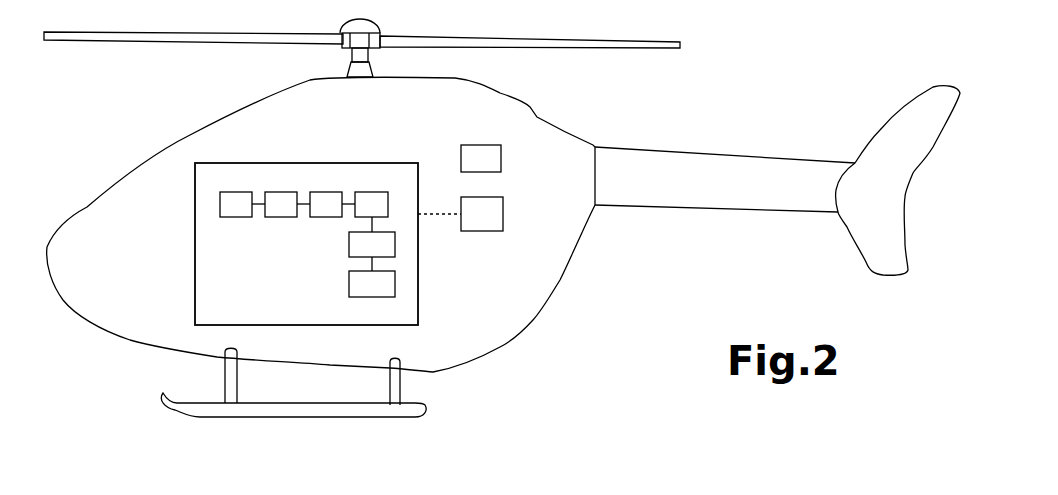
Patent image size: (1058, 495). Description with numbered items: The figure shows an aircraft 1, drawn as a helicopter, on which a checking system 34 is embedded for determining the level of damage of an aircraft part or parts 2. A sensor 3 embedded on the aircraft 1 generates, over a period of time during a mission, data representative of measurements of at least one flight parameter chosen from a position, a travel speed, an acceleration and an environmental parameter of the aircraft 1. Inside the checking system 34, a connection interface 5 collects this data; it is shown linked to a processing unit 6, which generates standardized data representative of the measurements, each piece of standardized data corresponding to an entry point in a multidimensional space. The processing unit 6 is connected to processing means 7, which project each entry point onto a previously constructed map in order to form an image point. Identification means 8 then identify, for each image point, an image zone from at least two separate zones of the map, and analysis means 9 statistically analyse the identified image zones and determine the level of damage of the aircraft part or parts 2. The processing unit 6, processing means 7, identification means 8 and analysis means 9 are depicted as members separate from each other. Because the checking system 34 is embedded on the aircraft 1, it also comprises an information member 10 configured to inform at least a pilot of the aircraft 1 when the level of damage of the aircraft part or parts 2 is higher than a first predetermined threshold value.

The aircraft 1 is at (557, 279).
The aircraft part 2 is at (490, 145).
The sensor 3 is at (503, 217).
The connection interface 5 is at (230, 217).
The processing unit 6 is at (285, 192).
The processing means 7 is at (337, 192).
The identification means 8 is at (370, 192).
The analysis means 9 is at (395, 240).
The information member 10 is at (395, 283).
The checking system 34 is at (195, 250).